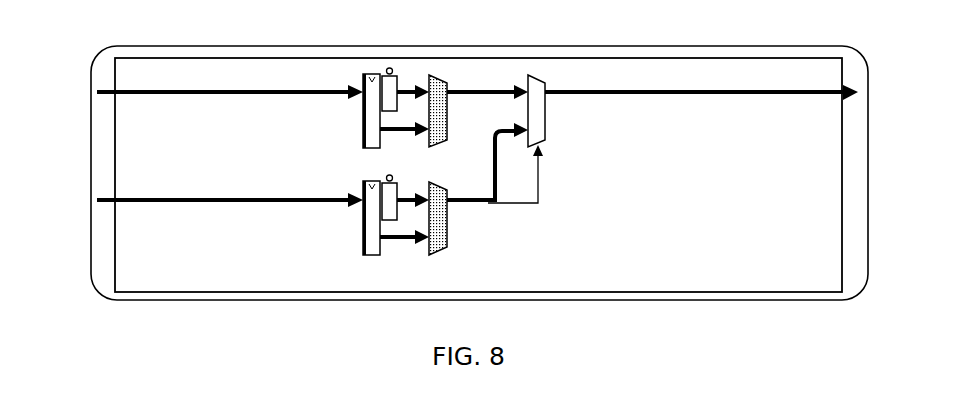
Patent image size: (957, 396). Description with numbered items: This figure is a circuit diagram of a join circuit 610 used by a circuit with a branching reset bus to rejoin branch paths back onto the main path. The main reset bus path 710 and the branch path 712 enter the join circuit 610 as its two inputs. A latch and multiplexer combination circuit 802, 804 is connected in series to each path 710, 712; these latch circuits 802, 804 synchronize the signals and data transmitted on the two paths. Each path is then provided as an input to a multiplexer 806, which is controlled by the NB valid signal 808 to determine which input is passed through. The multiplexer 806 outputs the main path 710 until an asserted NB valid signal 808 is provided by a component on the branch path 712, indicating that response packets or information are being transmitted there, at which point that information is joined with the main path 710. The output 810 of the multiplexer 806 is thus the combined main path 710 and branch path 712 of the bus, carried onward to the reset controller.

The join circuit 610 is at (266, 26).
The main reset bus path 710 is at (78, 90).
The branch path 712 is at (75, 202).
The latch and multiplexer combination circuit 802 is at (372, 84).
The latch and multiplexer combination circuit 804 is at (367, 243).
The multiplexer 806 is at (540, 138).
The NB valid signal 808 is at (465, 201).
The output data path 810 is at (738, 88).